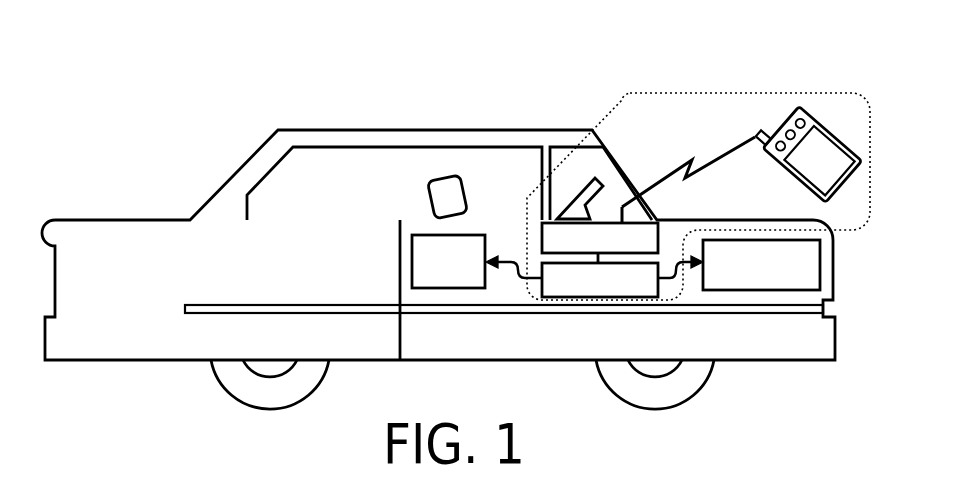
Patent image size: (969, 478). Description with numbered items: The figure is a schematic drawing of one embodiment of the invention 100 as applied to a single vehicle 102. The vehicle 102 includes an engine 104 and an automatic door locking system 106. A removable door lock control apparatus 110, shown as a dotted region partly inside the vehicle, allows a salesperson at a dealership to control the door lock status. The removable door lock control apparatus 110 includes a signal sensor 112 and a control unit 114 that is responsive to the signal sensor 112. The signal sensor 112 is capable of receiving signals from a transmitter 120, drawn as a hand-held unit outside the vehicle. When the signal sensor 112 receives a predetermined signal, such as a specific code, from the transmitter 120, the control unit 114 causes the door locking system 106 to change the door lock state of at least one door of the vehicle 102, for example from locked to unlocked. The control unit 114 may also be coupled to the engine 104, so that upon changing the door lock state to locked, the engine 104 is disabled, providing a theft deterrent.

The embodiment of the invention 100 is at (103, 91).
The vehicle 102 is at (131, 219).
The engine 104 is at (821, 262).
The automatic door locking system 106 is at (412, 264).
The removable door lock control apparatus 110 is at (747, 93).
The signal sensor 112 is at (660, 236).
The control unit 114 is at (604, 298).
The transmitter 120 is at (777, 164).